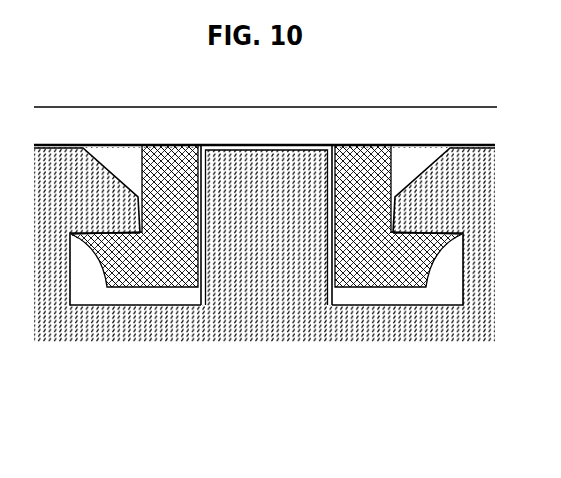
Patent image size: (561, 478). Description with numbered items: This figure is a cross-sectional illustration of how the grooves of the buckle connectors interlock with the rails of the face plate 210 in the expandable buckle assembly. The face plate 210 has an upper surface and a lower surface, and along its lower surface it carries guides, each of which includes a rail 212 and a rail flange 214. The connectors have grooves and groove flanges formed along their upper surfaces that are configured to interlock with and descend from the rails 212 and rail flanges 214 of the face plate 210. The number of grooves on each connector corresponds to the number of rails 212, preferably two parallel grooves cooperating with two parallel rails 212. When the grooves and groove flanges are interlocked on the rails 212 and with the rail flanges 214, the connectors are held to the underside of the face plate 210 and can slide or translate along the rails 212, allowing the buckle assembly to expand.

The face plate 210 is at (282, 138).
The rails 212 is at (188, 212).
The rail flanges 214 is at (141, 268).